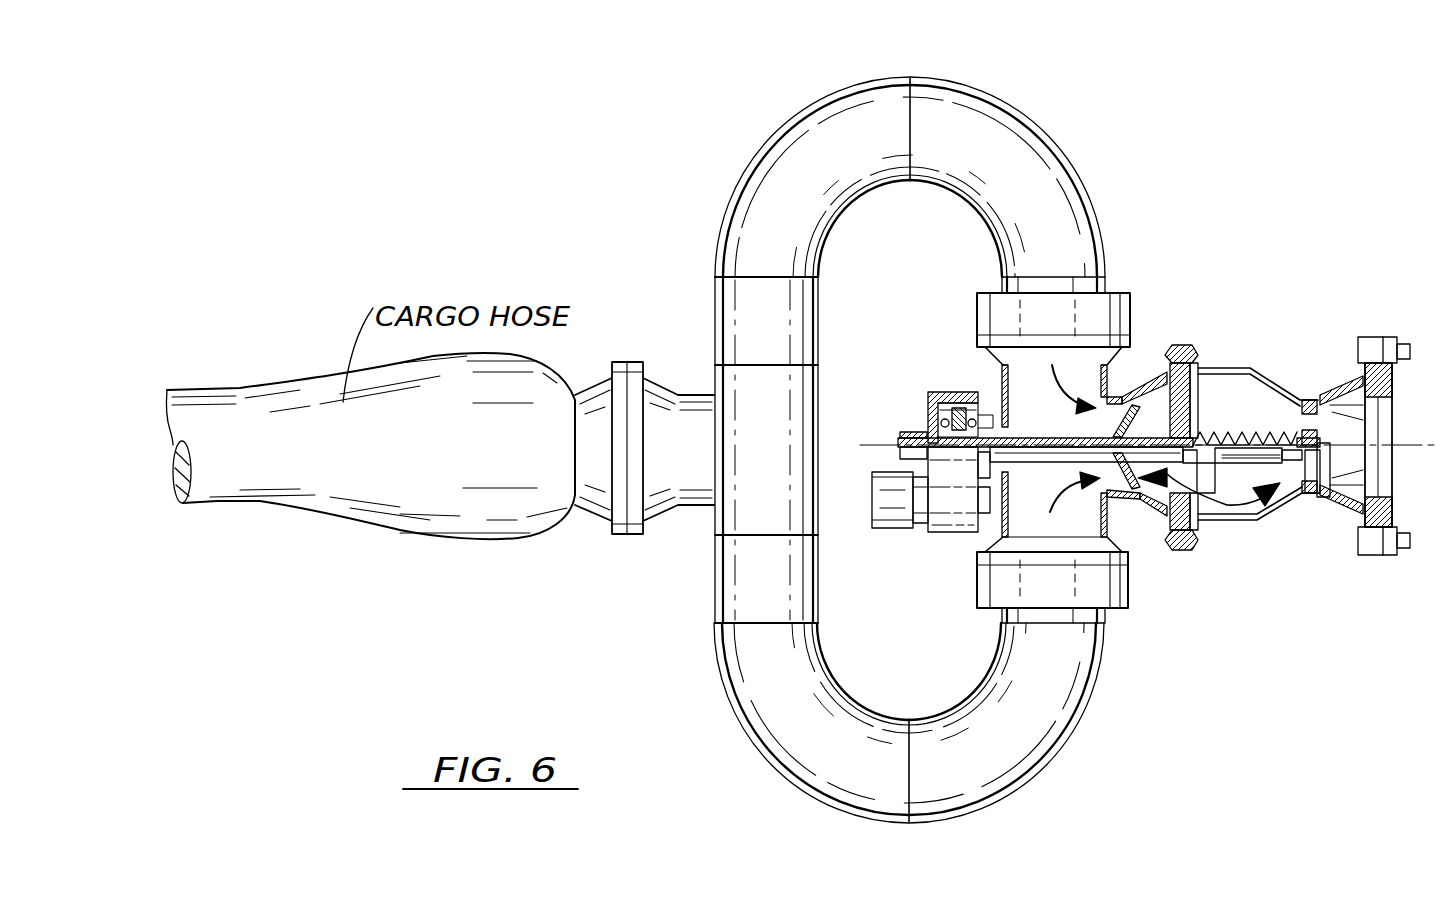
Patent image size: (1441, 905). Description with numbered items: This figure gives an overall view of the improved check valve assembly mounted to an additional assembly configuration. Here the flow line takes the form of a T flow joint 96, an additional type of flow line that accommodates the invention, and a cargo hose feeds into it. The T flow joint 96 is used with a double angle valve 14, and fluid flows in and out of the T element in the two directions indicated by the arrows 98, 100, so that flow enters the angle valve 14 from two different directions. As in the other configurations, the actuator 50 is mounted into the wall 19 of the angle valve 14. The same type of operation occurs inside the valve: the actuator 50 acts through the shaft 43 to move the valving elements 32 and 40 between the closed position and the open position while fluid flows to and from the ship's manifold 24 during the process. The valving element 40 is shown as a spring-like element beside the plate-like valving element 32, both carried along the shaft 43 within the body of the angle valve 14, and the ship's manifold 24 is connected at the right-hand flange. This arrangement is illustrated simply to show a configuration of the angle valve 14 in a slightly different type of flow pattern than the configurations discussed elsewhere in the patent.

The T flow joint 96 is at (942, 95).
The arrow 98 is at (1115, 297).
The arrow 100 is at (1122, 535).
The wall 19 is at (1000, 383).
The angle valve 14 is at (1000, 372).
The actuator 50 is at (928, 403).
The shaft 43 is at (1067, 448).
The valving element 32 is at (1198, 398).
The valving element 40 is at (1190, 418).
The ship's manifold 24 is at (1399, 446).